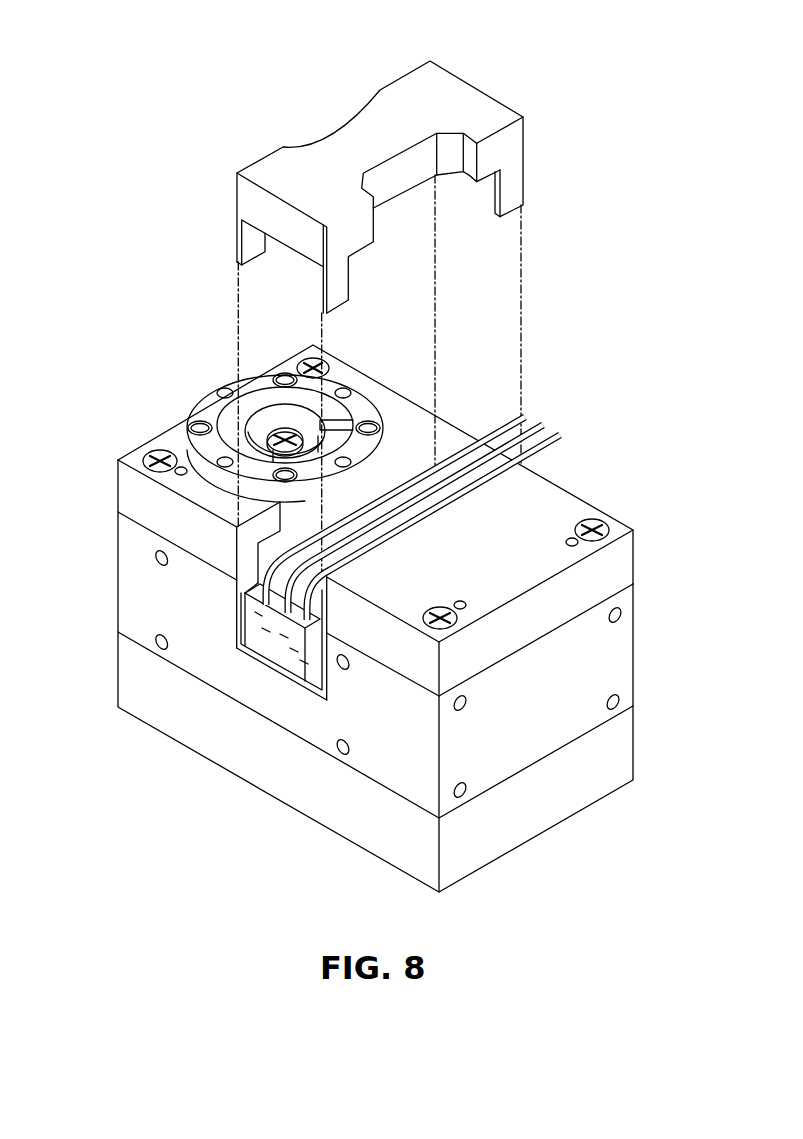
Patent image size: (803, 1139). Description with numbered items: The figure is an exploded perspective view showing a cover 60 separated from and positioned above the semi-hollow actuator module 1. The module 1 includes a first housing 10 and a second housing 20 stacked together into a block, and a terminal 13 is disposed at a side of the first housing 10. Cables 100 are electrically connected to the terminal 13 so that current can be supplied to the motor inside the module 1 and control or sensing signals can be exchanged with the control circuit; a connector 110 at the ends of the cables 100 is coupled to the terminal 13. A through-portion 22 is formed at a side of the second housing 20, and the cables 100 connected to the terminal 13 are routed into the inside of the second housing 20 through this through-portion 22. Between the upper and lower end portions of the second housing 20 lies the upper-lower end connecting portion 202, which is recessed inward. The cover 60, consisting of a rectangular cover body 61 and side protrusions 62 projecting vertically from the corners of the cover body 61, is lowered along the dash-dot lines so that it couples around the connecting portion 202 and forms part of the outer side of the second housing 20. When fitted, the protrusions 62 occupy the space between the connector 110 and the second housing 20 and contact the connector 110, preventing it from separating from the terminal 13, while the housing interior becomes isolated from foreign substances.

The semi-hollow actuator module 1 is at (590, 379).
The first housing 10 is at (128, 552).
The terminal 13 is at (303, 688).
The second housing 20 is at (128, 487).
The through-portion 22 is at (295, 606).
The cover 60 is at (486, 77).
The cover body 61 is at (484, 107).
The side protrusions 62 is at (508, 188).
The cables 100 is at (552, 448).
The connector 110 is at (270, 643).
The upper-lower end connecting portion 202 is at (270, 538).